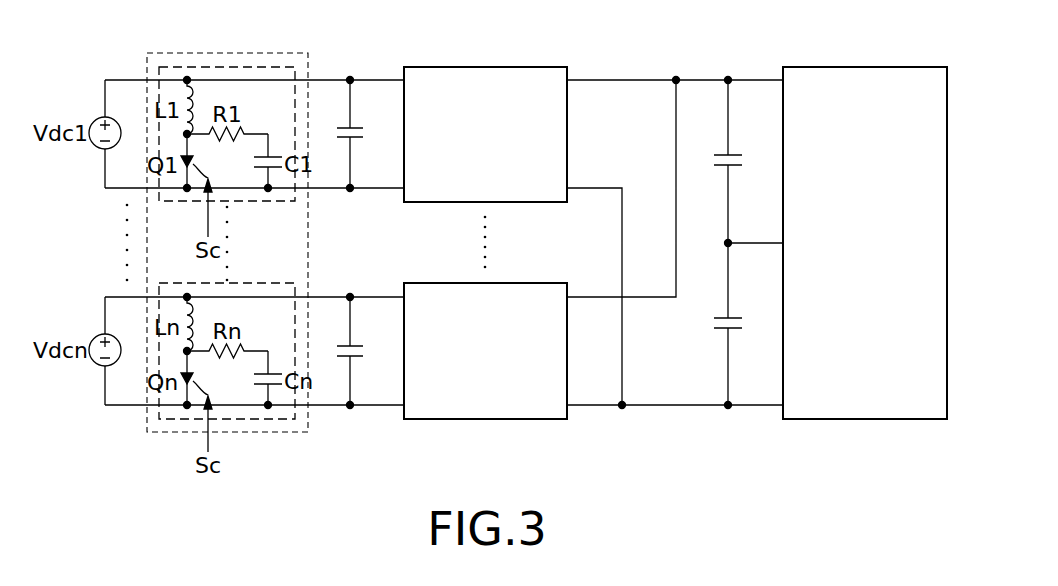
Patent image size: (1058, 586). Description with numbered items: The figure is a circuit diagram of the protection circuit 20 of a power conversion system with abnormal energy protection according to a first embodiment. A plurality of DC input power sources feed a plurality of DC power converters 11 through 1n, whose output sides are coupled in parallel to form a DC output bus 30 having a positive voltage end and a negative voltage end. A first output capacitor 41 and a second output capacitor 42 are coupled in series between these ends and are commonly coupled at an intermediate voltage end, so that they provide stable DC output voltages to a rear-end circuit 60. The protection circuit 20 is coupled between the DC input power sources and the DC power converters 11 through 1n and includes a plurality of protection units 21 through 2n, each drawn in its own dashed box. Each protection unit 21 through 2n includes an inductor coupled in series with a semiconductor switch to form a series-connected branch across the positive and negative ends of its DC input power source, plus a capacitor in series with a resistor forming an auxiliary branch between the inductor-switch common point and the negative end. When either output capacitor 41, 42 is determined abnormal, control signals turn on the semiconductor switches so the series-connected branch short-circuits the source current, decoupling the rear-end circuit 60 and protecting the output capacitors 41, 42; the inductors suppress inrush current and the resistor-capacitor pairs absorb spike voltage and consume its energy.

The DC power converter 11 is at (485, 68).
The DC power converter 1n is at (495, 284).
The protection circuit 20 is at (227, 53).
The protection unit 21 is at (187, 67).
The protection unit 2n is at (187, 420).
The DC output bus 30 is at (758, 68).
The first output capacitor 41 is at (735, 150).
The second output capacitor 42 is at (735, 314).
The rear-end circuit 60 is at (865, 72).